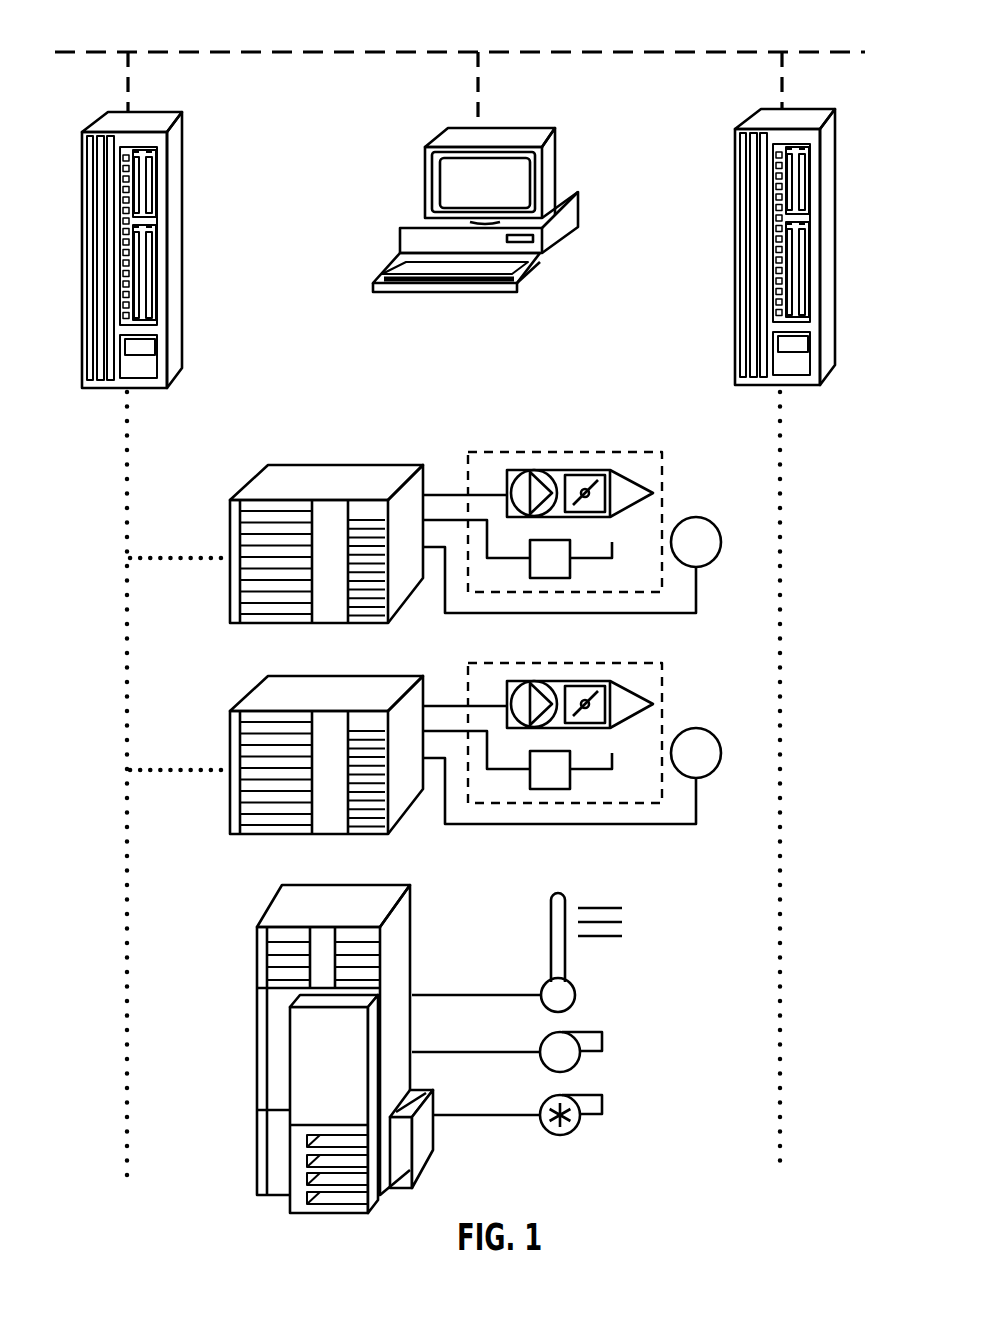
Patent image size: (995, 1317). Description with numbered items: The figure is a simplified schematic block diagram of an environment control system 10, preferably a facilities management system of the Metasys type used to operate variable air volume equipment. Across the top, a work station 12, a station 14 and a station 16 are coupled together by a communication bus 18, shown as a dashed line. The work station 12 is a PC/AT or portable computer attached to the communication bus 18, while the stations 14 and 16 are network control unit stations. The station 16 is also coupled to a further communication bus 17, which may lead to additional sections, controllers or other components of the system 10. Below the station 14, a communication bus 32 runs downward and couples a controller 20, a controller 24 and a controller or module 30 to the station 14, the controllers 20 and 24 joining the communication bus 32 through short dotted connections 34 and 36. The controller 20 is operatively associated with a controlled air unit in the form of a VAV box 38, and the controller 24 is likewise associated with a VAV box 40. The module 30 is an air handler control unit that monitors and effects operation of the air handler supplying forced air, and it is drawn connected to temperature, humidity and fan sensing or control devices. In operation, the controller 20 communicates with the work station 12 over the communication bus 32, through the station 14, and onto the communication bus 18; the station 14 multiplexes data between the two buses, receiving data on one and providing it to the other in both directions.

The environment control system 10 is at (92, 731).
The work station 12 is at (555, 158).
The station 14 is at (185, 158).
The station 16 is at (838, 158).
The communication bus 17 is at (782, 884).
The communication bus 18 is at (555, 50).
The controller 20 is at (423, 465).
The controller 24 is at (425, 676).
The controller or module 30 is at (412, 925).
The communication bus 32 is at (127, 885).
The bus connection 34 is at (230, 557).
The bus connection 36 is at (230, 769).
The VAV box 38 is at (662, 455).
The VAV box 40 is at (662, 666).